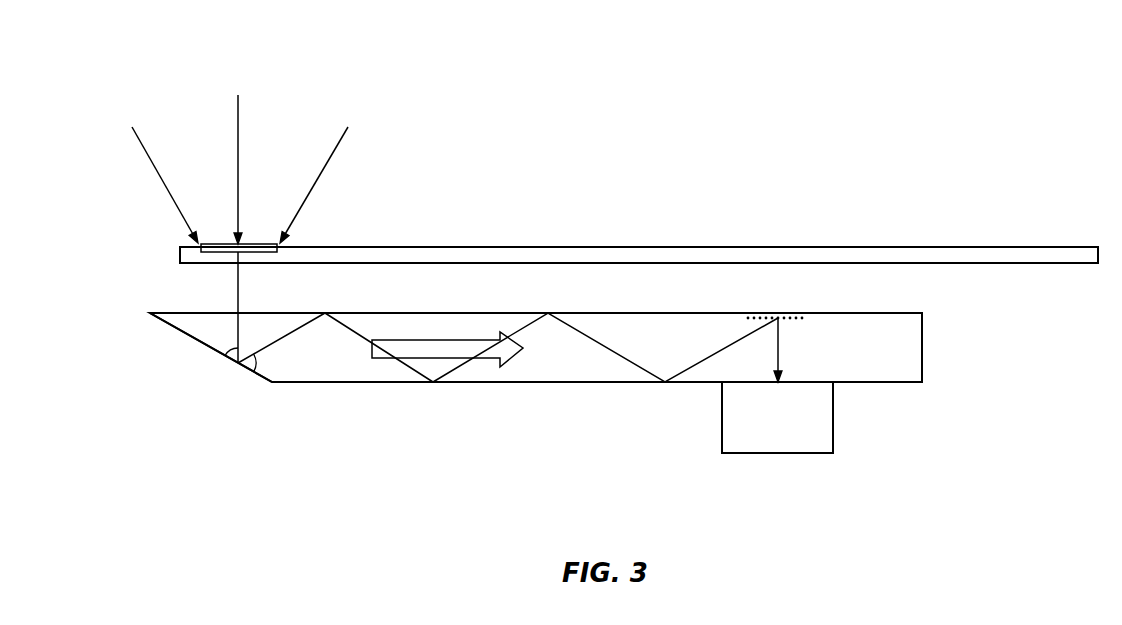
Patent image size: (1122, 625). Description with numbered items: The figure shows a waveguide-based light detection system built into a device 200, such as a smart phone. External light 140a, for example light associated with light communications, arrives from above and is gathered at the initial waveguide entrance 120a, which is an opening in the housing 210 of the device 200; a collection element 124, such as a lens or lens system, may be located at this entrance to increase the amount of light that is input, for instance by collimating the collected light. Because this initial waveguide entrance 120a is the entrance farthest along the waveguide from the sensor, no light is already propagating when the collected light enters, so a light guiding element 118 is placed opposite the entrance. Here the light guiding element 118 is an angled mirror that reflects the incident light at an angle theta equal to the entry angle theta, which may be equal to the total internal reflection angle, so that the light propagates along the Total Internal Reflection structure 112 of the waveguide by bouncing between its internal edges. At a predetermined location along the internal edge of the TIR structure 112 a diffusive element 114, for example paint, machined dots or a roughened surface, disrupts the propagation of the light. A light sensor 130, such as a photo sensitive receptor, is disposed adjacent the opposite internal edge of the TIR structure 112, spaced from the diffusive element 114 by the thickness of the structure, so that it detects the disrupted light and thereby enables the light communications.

The light 140a is at (285, 89).
The collection element 124 is at (258, 245).
The housing 210 is at (928, 247).
The initial waveguide entrance 120a is at (220, 281).
The light guiding element 118 is at (228, 371).
The device 200 is at (1005, 313).
The Total Internal Reflection structure 112 is at (479, 373).
The diffusive element 114 is at (793, 322).
The light sensor 130 is at (777, 417).